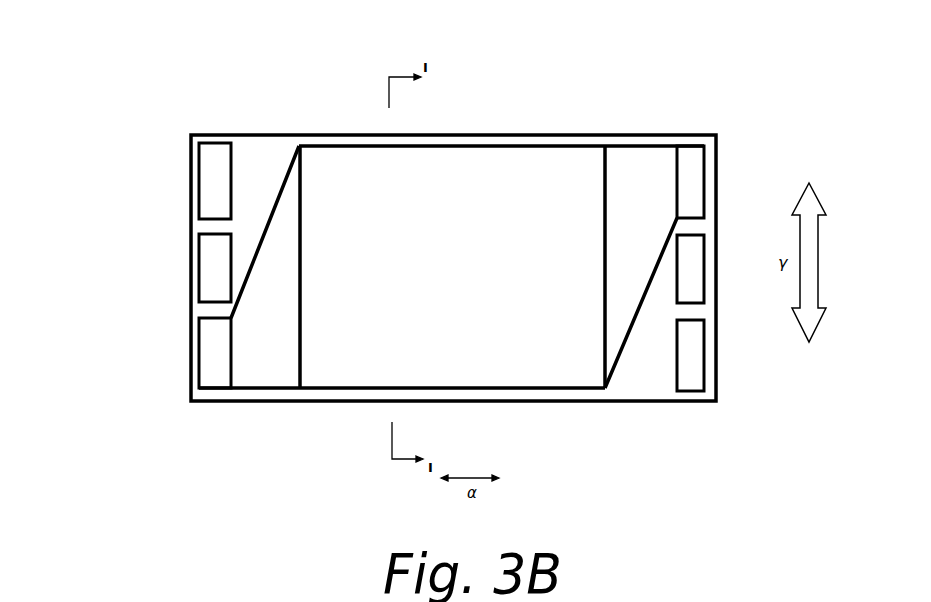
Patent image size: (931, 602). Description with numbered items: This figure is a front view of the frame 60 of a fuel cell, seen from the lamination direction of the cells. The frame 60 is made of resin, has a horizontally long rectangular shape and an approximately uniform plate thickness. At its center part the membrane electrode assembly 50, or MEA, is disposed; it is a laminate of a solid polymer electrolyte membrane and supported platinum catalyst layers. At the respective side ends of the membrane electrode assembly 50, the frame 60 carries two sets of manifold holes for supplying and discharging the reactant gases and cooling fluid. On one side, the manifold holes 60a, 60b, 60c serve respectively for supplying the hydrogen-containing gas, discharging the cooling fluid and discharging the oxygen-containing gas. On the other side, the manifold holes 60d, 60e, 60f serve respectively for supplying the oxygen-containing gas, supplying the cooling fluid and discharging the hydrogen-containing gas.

The membrane electrode assembly 50 is at (461, 278).
The frame 60 is at (250, 152).
The manifold hole 60a is at (208, 212).
The manifold hole 60b is at (208, 272).
The manifold hole 60c is at (208, 350).
The manifold hole 60d is at (695, 156).
The manifold hole 60e is at (697, 247).
The manifold hole 60f is at (697, 323).